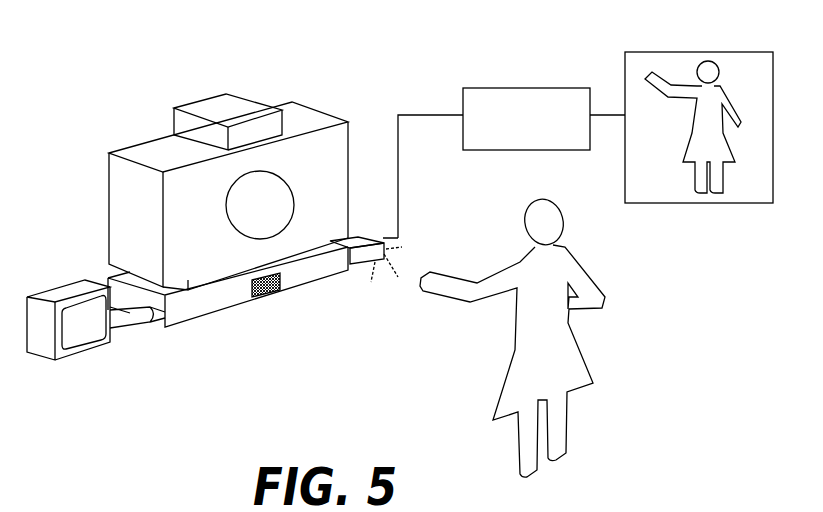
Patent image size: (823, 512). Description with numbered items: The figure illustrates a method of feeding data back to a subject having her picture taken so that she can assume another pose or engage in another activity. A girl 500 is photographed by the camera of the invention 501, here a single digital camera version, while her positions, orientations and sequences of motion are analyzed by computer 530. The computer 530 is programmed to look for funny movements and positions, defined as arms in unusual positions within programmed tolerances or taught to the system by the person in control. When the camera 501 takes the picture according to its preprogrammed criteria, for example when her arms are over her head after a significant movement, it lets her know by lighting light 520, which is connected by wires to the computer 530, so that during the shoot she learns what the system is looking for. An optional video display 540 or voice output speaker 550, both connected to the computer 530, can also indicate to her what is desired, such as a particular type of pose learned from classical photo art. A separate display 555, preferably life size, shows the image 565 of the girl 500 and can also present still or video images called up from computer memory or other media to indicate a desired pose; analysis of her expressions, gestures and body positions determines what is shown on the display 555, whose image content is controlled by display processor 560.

The girl 500 is at (575, 338).
The camera of the invention 501 is at (352, 133).
The light 520 is at (361, 266).
The computer 530 is at (200, 311).
The video display 540 is at (48, 289).
The voice output speaker 550 is at (272, 297).
The display 555 is at (624, 68).
The display processor 560 is at (493, 88).
The image of the person 565 is at (647, 60).